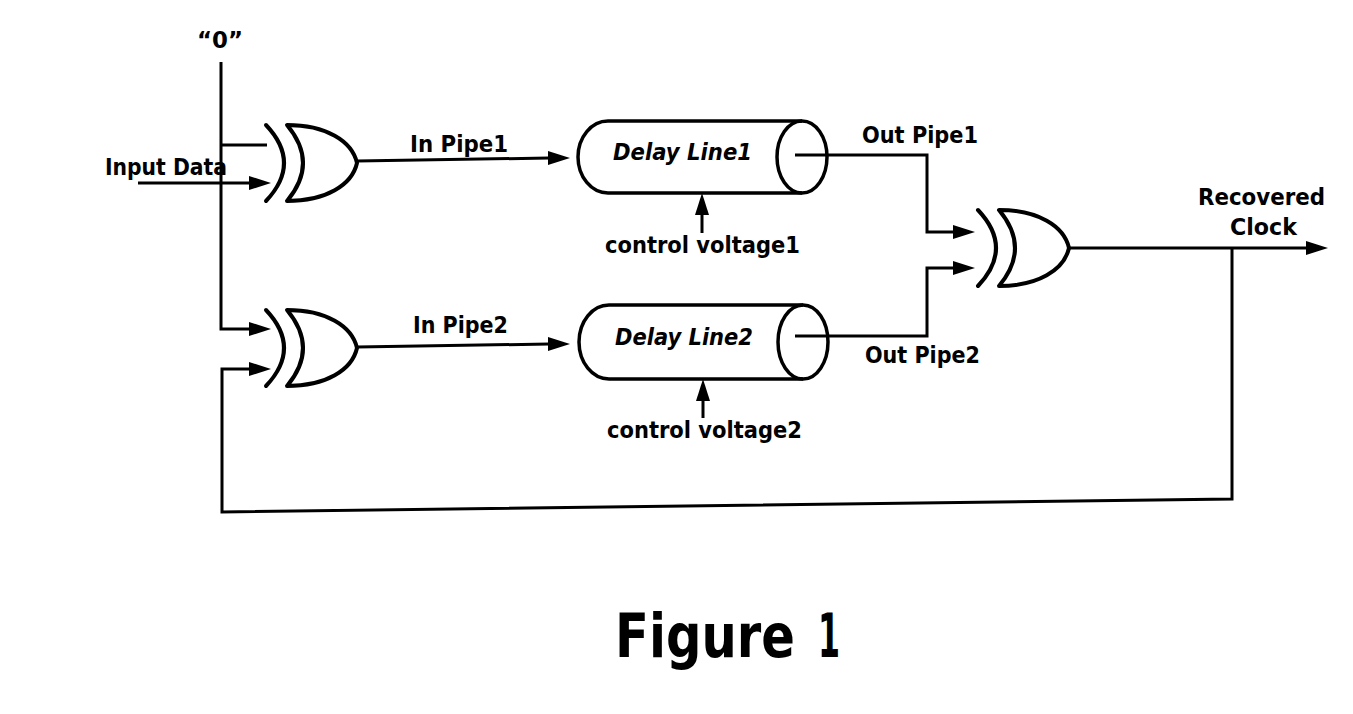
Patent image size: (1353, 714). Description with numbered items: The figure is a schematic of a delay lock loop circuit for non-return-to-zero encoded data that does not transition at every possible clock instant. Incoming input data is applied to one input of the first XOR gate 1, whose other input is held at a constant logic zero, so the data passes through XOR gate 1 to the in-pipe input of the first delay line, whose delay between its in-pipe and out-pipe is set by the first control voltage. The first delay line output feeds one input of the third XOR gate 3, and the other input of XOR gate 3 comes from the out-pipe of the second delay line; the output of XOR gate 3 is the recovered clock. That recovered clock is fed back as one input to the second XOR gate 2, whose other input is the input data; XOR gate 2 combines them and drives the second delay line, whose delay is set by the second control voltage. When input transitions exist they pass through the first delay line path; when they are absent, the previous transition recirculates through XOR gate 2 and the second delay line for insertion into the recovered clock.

The XOR gate1 1 is at (310, 145).
The XOR gate2 2 is at (312, 329).
The XOR gate3 3 is at (1022, 230).